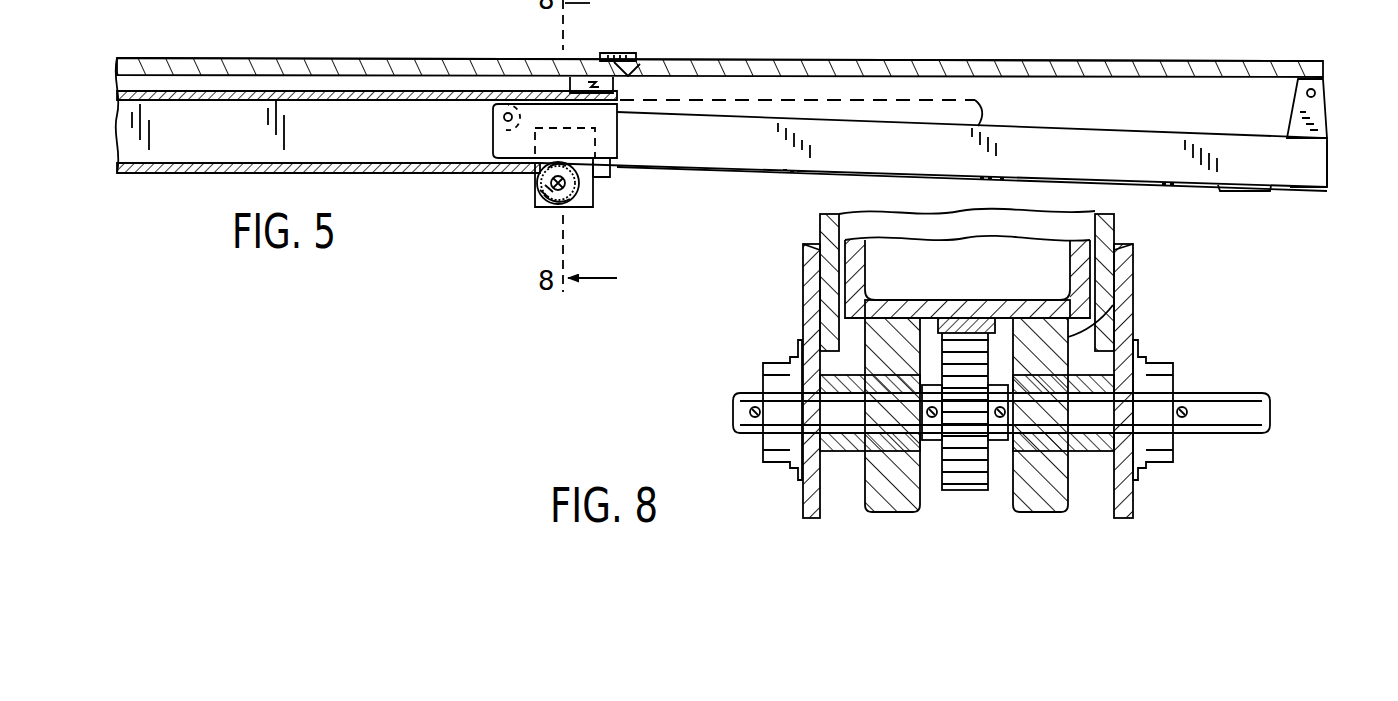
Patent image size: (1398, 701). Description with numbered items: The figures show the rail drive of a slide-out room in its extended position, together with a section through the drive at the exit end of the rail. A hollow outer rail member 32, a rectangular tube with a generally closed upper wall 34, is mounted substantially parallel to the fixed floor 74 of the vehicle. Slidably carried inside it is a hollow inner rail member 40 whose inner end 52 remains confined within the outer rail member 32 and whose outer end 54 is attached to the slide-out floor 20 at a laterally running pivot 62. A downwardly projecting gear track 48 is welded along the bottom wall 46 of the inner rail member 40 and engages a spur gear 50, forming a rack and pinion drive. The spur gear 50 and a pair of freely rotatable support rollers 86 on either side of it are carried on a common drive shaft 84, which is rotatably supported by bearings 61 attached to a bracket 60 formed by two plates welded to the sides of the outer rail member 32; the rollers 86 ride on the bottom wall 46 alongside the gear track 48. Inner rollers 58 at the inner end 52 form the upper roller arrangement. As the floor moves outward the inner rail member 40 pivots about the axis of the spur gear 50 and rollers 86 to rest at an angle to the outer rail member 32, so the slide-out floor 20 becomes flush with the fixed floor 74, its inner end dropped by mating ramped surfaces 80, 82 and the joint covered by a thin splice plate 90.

In FIG. 5, the slide-out floor 20 is at (1003, 72).
In FIG. 5, the outer rail member 32 is at (200, 140).
In FIG. 8, the outer rail member 32 is at (1110, 243).
In FIG. 5, the upper wall 34 is at (412, 92).
In FIG. 5, the inner rail member 40 is at (1103, 165).
In FIG. 8, the inner rail member 40 is at (850, 302).
In FIG. 5, the bottom wall 46 is at (1303, 188).
In FIG. 8, the bottom wall 46 is at (960, 318).
In FIG. 5, the gear track 48 is at (1216, 191).
In FIG. 8, the gear track 48 is at (1115, 308).
In FIG. 5, the spur gear 50 is at (537, 183).
In FIG. 8, the spur gear 50 is at (965, 462).
In FIG. 5, the inner end 52 is at (496, 136).
In FIG. 5, the outer end 54 is at (1332, 151).
In FIG. 5, the inner rollers 58 is at (504, 117).
In FIG. 5, the bracket 60 is at (585, 200).
In FIG. 8, the bracket 60 is at (808, 502).
In FIG. 8, the bearings 61 is at (777, 362).
In FIG. 5, the pivot 62 is at (1316, 94).
In FIG. 5, the fixed floor 74 is at (304, 68).
In FIG. 8, the fixed floor 74 is at (920, 318).
In FIG. 5, the ramped surface 80 is at (638, 76).
In FIG. 5, the ramped surface 82 is at (622, 80).
In FIG. 5, the drive shaft 84 is at (566, 183).
In FIG. 8, the drive shaft 84 is at (1226, 408).
In FIG. 5, the support rollers 86 is at (563, 195).
In FIG. 8, the support rollers 86 is at (880, 495).
In FIG. 5, the splice plate 90 is at (610, 53).